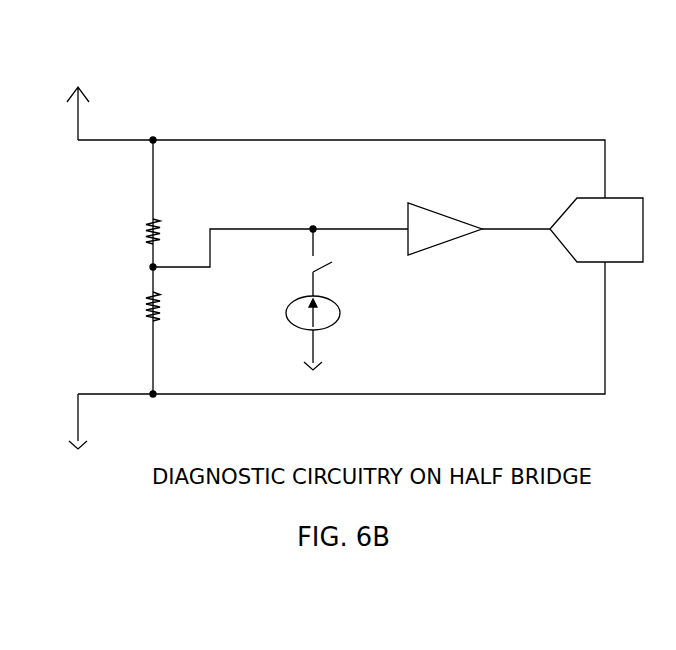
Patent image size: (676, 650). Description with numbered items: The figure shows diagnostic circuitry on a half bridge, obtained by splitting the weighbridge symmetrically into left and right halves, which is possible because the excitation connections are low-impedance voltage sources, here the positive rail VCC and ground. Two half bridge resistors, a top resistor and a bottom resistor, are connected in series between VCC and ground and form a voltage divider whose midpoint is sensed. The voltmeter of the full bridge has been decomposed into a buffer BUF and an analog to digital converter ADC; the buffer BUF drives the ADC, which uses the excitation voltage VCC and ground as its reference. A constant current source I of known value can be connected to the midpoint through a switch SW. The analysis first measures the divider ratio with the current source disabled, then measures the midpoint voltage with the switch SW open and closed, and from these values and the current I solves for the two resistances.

The excitation voltage VCC is at (75, 102).
The switch SW is at (300, 262).
The constant current source I is at (304, 333).
The buffer BUF is at (479, 229).
The analog to digital converter ADC is at (596, 230).